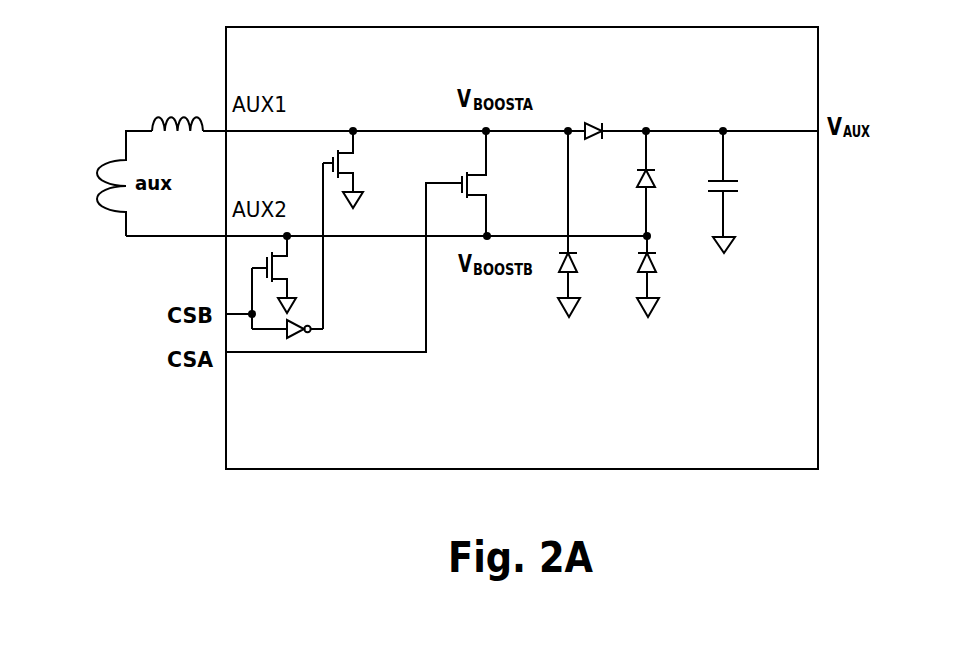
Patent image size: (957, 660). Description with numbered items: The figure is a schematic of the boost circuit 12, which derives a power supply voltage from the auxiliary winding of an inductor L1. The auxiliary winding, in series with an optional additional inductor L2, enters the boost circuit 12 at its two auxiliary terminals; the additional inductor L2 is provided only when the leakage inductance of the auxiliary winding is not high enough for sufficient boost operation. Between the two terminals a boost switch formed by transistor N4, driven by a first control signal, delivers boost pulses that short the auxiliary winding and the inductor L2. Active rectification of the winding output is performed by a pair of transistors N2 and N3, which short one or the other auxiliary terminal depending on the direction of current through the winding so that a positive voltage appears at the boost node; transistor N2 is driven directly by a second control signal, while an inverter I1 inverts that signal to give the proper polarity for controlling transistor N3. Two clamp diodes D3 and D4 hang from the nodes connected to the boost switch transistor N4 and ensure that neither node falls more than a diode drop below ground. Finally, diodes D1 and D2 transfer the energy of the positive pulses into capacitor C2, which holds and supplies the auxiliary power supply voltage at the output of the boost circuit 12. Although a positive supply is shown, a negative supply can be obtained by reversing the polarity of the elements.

The boost circuit 12 is at (403, 62).
The inductor L1 is at (91, 183).
The additional inductor L2 is at (177, 105).
The transistor N2 is at (284, 282).
The transistor N3 is at (355, 230).
The transistor N4 is at (508, 183).
The inverter I1 is at (287, 319).
The diode D1 is at (593, 162).
The diode D2 is at (666, 183).
The diode D3 is at (664, 276).
The diode D4 is at (585, 276).
The capacitor C2 is at (738, 192).